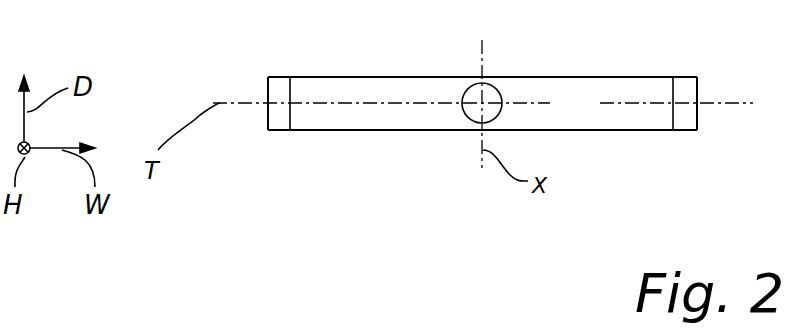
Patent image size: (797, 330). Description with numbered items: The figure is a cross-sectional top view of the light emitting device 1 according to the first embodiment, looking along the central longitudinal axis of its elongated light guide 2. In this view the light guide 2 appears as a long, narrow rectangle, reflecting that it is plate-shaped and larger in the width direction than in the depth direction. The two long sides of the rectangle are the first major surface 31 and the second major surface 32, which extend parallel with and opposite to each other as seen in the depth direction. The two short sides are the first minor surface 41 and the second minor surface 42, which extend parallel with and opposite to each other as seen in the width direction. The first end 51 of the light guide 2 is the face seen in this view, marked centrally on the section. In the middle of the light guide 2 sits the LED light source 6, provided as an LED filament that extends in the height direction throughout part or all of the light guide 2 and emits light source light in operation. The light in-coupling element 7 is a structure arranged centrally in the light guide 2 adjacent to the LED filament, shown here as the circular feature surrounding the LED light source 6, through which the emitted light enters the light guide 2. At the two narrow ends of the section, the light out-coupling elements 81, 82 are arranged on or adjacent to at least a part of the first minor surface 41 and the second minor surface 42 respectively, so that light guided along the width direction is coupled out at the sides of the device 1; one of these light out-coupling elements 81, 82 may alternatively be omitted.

The light emitting device 1 is at (202, 59).
The elongated light guide 2 is at (650, 163).
The LED light source 6 is at (472, 110).
The light in-coupling element 7 is at (497, 89).
The first major surface 31 is at (368, 77).
The second major surface 32 is at (365, 130).
The first minor surface 41 is at (672, 94).
The second minor surface 42 is at (292, 93).
The first end 51 is at (593, 119).
The light out-coupling element 81 is at (689, 88).
The light out-coupling element 82 is at (278, 113).